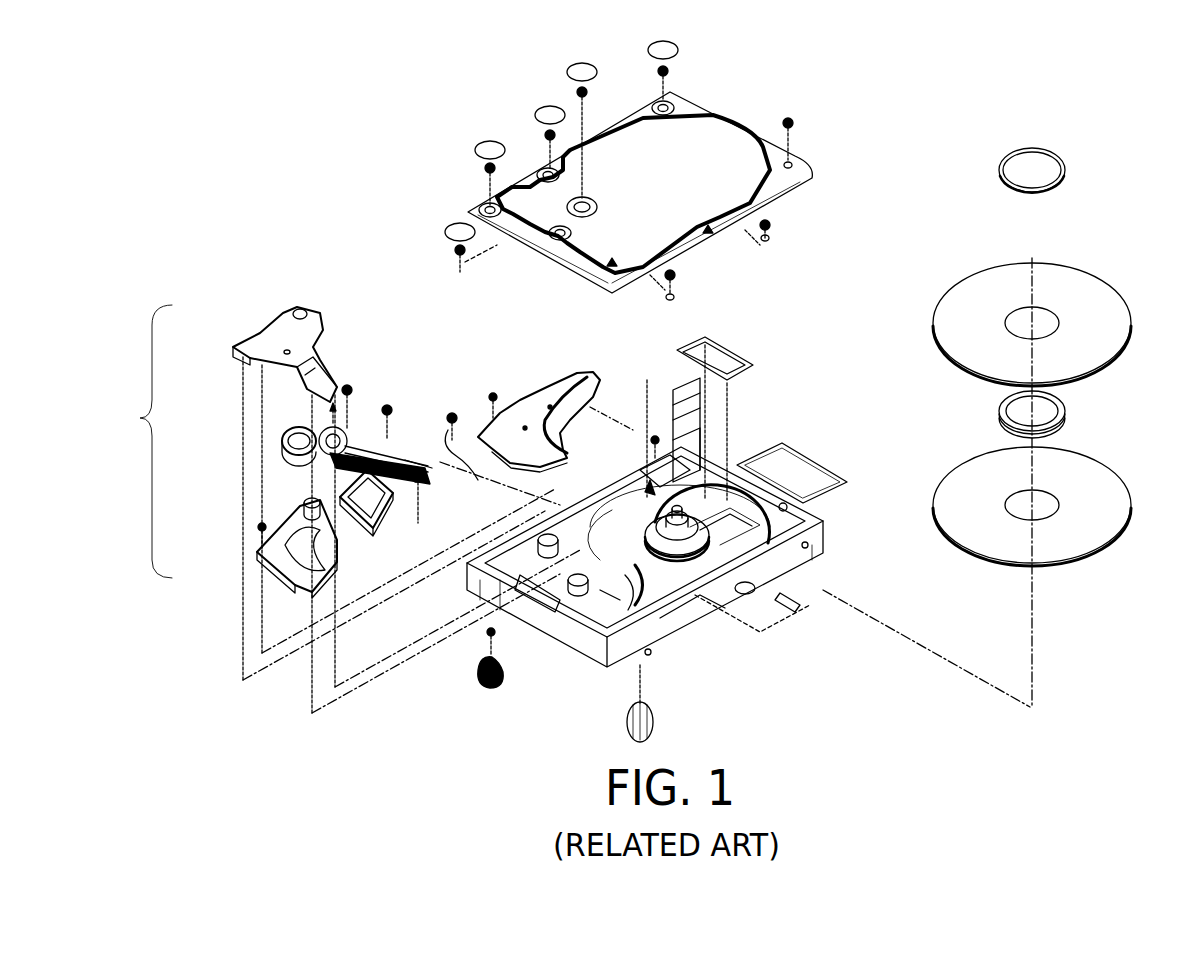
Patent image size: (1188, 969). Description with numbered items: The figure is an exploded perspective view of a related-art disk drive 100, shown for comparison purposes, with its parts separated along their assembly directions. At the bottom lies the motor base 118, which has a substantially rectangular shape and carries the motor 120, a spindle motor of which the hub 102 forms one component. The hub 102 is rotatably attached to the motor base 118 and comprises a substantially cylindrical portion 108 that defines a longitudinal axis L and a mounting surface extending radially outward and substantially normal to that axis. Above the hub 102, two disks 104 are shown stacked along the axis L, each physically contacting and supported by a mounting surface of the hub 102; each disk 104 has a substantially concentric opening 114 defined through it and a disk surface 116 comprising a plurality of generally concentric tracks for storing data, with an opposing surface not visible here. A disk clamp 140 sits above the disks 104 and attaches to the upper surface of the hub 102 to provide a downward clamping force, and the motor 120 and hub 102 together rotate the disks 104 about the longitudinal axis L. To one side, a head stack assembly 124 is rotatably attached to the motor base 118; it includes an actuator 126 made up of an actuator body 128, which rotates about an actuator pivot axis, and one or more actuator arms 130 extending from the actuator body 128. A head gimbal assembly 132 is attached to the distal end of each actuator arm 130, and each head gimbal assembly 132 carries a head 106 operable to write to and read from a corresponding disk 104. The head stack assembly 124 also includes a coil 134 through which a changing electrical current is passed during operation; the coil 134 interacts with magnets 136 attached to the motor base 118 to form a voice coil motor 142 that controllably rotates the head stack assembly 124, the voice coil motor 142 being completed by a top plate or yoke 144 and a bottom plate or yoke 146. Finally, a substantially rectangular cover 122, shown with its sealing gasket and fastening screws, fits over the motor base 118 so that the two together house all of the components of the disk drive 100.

The disk drive 100 is at (272, 78).
The hub 102 is at (823, 575).
The disk 104 is at (932, 313).
The head 106 is at (440, 455).
The substantially cylindrical portion 108 is at (722, 554).
The concentric opening 114 is at (1042, 305).
The disk surface 116 is at (1107, 313).
The motor base 118 is at (830, 572).
The motor 120 is at (691, 418).
The cover 122 is at (802, 192).
The head stack assembly 124 is at (416, 509).
The actuator 126 is at (350, 385).
The actuator body 128 is at (340, 430).
The actuator arm 130 is at (387, 405).
The head gimbal assembly 132 is at (422, 450).
The coil 134 is at (283, 427).
The magnet 136 is at (278, 527).
The disk clamp 140 is at (998, 171).
The voice coil motor 142 is at (123, 441).
The top plate (yoke) 144 is at (282, 327).
The bottom plate (yoke) 146 is at (258, 557).
The longitudinal axis L is at (1034, 637).